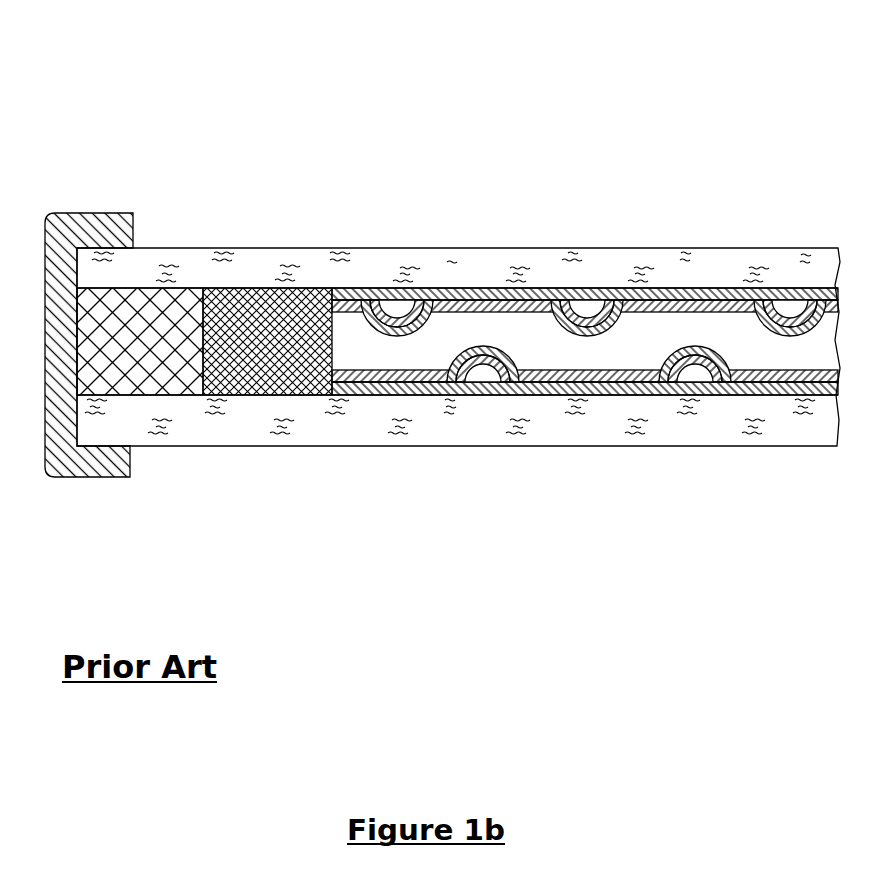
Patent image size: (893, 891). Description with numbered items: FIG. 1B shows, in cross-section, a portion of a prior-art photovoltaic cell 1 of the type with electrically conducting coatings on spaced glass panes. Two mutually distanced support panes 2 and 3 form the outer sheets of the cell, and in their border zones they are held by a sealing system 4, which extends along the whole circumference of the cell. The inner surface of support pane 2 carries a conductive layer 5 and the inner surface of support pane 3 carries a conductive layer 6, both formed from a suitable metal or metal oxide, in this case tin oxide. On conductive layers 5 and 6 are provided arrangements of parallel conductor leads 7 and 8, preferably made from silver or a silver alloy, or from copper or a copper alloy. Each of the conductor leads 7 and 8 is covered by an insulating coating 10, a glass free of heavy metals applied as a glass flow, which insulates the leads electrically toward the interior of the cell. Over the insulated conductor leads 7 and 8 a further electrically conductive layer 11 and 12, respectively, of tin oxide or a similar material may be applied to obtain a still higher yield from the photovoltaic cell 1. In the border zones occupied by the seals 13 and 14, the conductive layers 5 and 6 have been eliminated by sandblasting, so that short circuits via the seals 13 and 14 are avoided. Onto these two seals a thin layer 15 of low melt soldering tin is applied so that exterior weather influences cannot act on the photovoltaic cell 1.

The photovoltaic cell 1 is at (806, 39).
The support pane 2 is at (487, 265).
The support pane 3 is at (428, 415).
The sealing system 4 is at (90, 193).
The conductive layer 5 is at (537, 295).
The conductive layer 6 is at (587, 383).
The conductor leads 7 is at (390, 302).
The conductor leads 8 is at (490, 380).
The insulating coating 10 is at (410, 300).
The electrically conductive layer 11 is at (700, 308).
The electrically conductive layer 12 is at (392, 370).
The seal 13 is at (260, 355).
The seal 14 is at (170, 355).
The thin layer of low melt soldering tin 15 is at (57, 392).